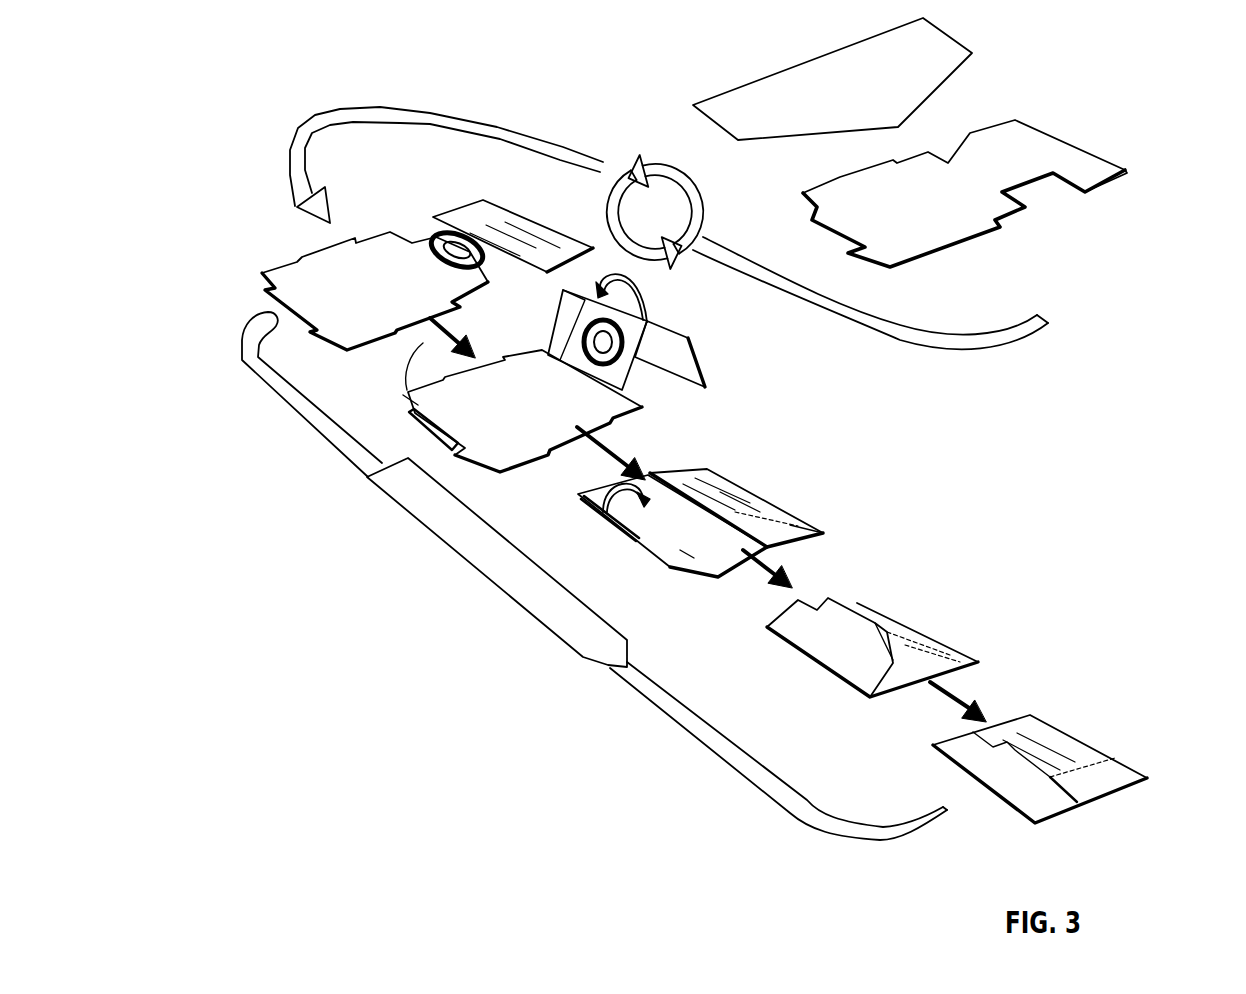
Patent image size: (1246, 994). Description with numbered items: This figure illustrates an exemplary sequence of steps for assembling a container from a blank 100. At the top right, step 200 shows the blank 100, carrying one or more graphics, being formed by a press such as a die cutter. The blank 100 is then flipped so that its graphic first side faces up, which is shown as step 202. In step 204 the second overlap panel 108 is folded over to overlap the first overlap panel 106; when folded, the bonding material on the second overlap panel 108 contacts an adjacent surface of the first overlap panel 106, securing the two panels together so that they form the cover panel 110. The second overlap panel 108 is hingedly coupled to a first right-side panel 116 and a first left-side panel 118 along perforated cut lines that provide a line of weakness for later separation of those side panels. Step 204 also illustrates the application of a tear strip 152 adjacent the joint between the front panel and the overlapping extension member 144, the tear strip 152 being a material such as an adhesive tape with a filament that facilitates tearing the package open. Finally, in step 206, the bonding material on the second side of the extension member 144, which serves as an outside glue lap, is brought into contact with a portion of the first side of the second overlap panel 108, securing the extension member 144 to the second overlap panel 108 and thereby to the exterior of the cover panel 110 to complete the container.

The blank 100 is at (967, 251).
The step 200 is at (1137, 18).
The first overlap panel 106 is at (572, 340).
The second overlap panel 108 is at (500, 229).
The cover panel 110 is at (746, 502).
The first right-side panel 116 is at (795, 532).
The first left-side panel 118 is at (680, 471).
The overlapping extension member 144 is at (262, 275).
The tear strip 152 is at (448, 432).
The step 202 is at (252, 422).
The step 204 is at (585, 692).
The step 206 is at (867, 922).